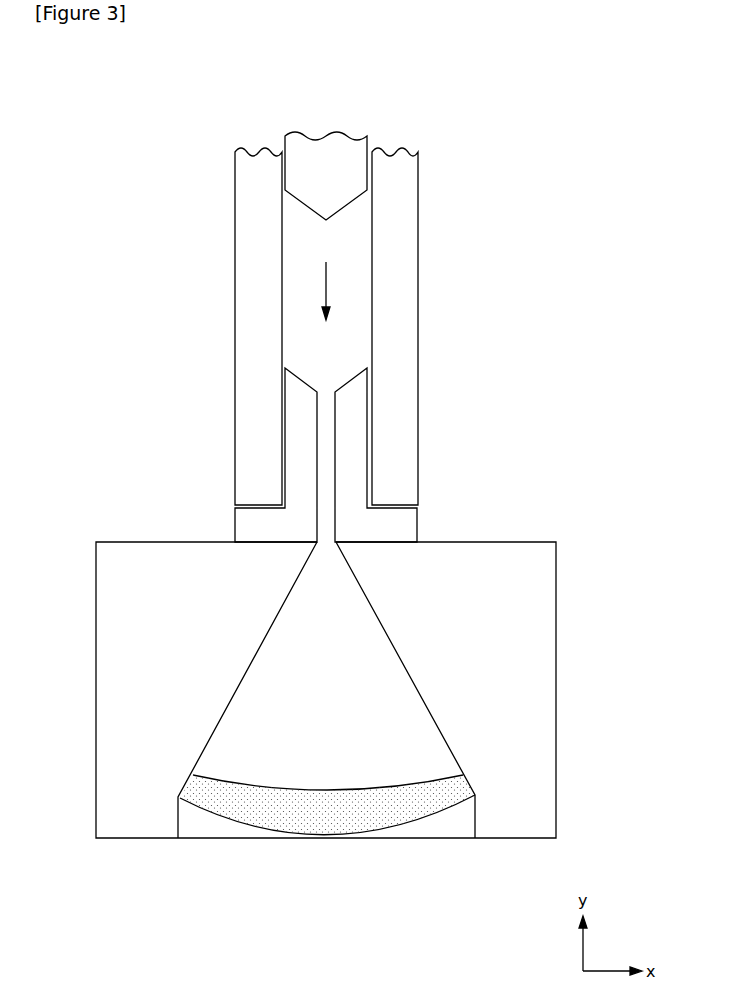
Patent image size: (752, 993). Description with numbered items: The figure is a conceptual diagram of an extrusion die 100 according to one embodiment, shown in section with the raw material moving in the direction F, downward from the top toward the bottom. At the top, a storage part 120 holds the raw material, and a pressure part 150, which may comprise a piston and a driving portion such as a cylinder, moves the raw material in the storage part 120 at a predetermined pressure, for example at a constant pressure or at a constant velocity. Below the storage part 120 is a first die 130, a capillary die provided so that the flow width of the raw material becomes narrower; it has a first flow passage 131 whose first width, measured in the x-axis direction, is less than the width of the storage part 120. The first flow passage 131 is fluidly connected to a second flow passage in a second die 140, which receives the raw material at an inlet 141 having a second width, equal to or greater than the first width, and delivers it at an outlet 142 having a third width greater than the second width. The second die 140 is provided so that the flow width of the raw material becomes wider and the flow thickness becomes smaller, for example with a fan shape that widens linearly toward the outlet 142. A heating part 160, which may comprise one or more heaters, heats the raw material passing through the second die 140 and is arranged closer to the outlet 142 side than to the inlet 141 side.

The extrusion die 100 is at (91, 98).
The storage part 120 is at (352, 225).
The first die 130 is at (418, 527).
The first flow passage 131 is at (322, 431).
The second die 140 is at (556, 582).
The inlet 141 is at (322, 545).
The outlet 142 is at (225, 840).
The pressure part 150 is at (328, 171).
The heating part 160 is at (328, 826).
The moving direction of the raw material F is at (326, 285).